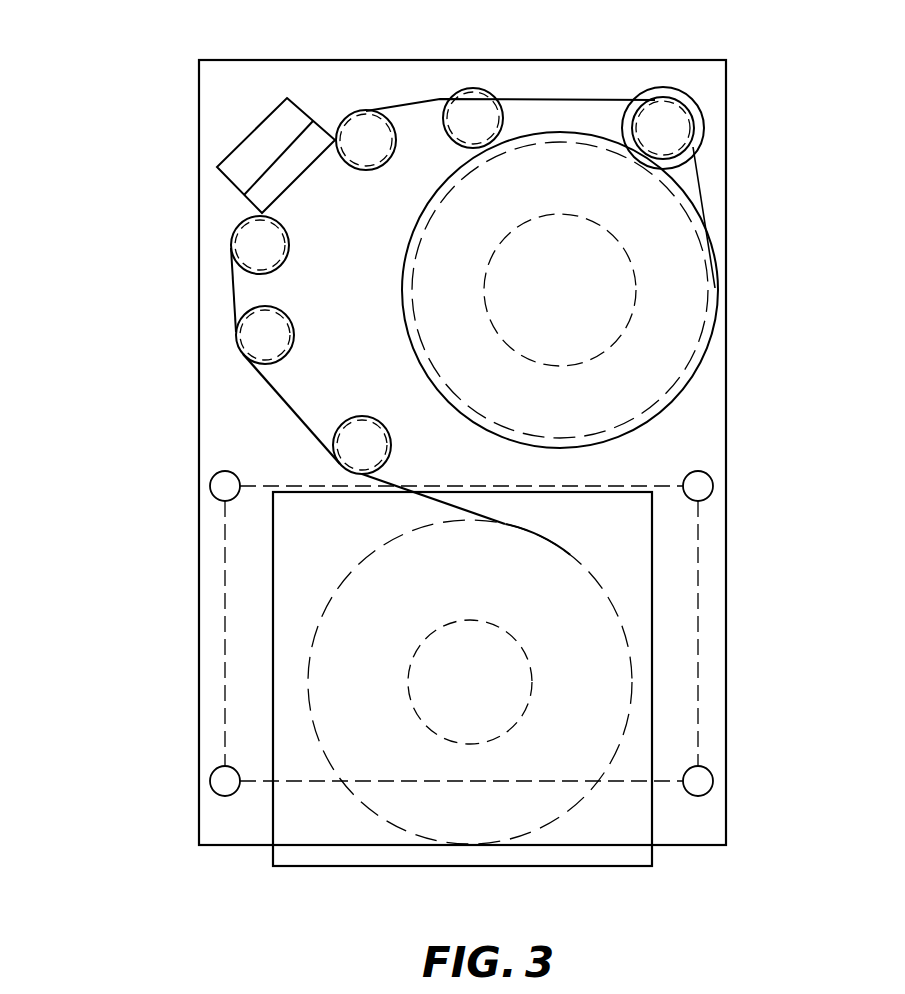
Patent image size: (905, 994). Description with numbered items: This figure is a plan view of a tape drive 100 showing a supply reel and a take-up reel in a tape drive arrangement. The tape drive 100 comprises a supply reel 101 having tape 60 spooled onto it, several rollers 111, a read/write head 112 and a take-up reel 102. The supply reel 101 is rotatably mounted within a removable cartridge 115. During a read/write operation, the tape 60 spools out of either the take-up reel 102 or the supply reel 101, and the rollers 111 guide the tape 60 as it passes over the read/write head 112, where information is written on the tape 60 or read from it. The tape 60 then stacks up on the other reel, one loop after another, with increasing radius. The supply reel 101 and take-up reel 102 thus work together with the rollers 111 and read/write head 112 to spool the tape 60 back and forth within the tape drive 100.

The tape drive 100 is at (123, 796).
The supply reel 101 is at (318, 623).
The take-up reel 102 is at (675, 252).
The rollers 111 is at (375, 130).
The read/write head 112 is at (257, 140).
The removable cartridge 115 is at (653, 673).
The tape 60 is at (290, 400).